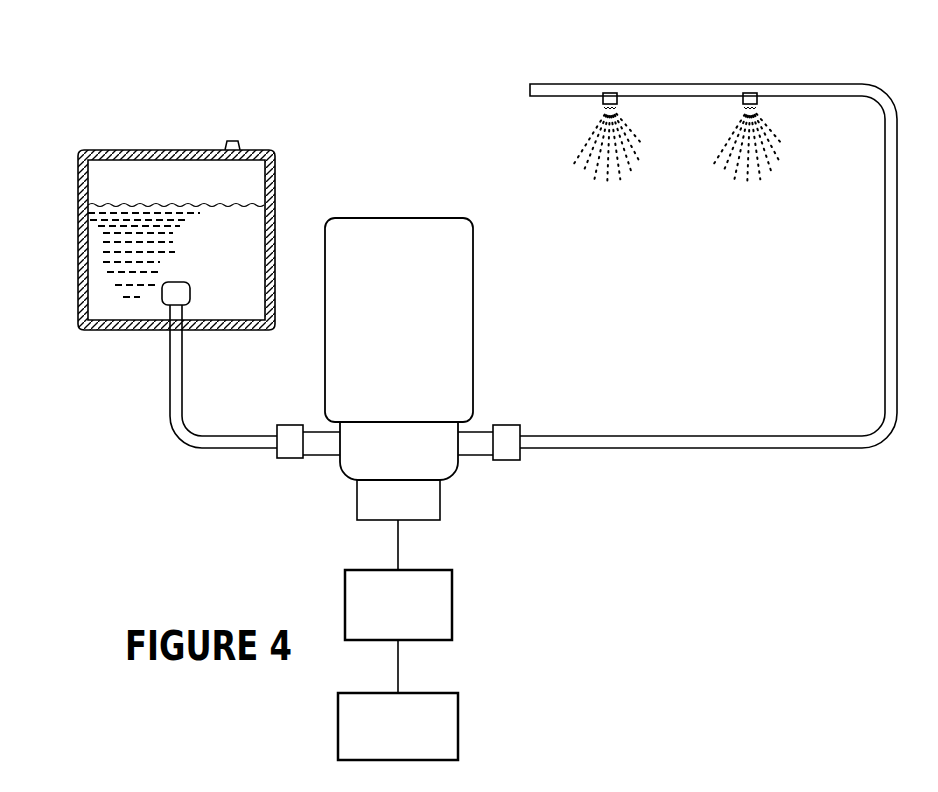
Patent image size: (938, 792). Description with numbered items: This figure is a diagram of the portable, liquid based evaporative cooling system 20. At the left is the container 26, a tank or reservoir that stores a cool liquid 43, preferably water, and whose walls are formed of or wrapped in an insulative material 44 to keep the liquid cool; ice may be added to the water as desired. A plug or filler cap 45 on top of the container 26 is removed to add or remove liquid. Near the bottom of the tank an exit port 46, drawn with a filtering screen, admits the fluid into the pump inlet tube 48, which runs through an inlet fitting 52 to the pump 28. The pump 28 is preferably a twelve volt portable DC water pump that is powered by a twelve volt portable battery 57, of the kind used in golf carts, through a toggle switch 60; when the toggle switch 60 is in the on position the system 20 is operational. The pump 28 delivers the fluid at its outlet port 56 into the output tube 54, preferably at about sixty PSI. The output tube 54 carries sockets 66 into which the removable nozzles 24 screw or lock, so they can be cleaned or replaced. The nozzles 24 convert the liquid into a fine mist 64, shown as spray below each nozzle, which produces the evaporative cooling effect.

The evaporative cooling system 20 is at (316, 106).
The container 26 is at (150, 200).
The insulative material 44 is at (80, 182).
The water 43 is at (133, 256).
The filler cap 45 is at (232, 146).
The exit port 46 is at (175, 334).
The pump inlet tube 48 is at (173, 430).
The inlet fitting 52 is at (288, 450).
The pump 28 is at (356, 388).
The outlet port 56 is at (505, 448).
The output tube 54 is at (888, 403).
The sockets 66 is at (748, 92).
The nozzles 24 is at (716, 113).
The mist spray 64 is at (588, 174).
The toggle switch 60 is at (453, 618).
The portable battery 57 is at (460, 708).